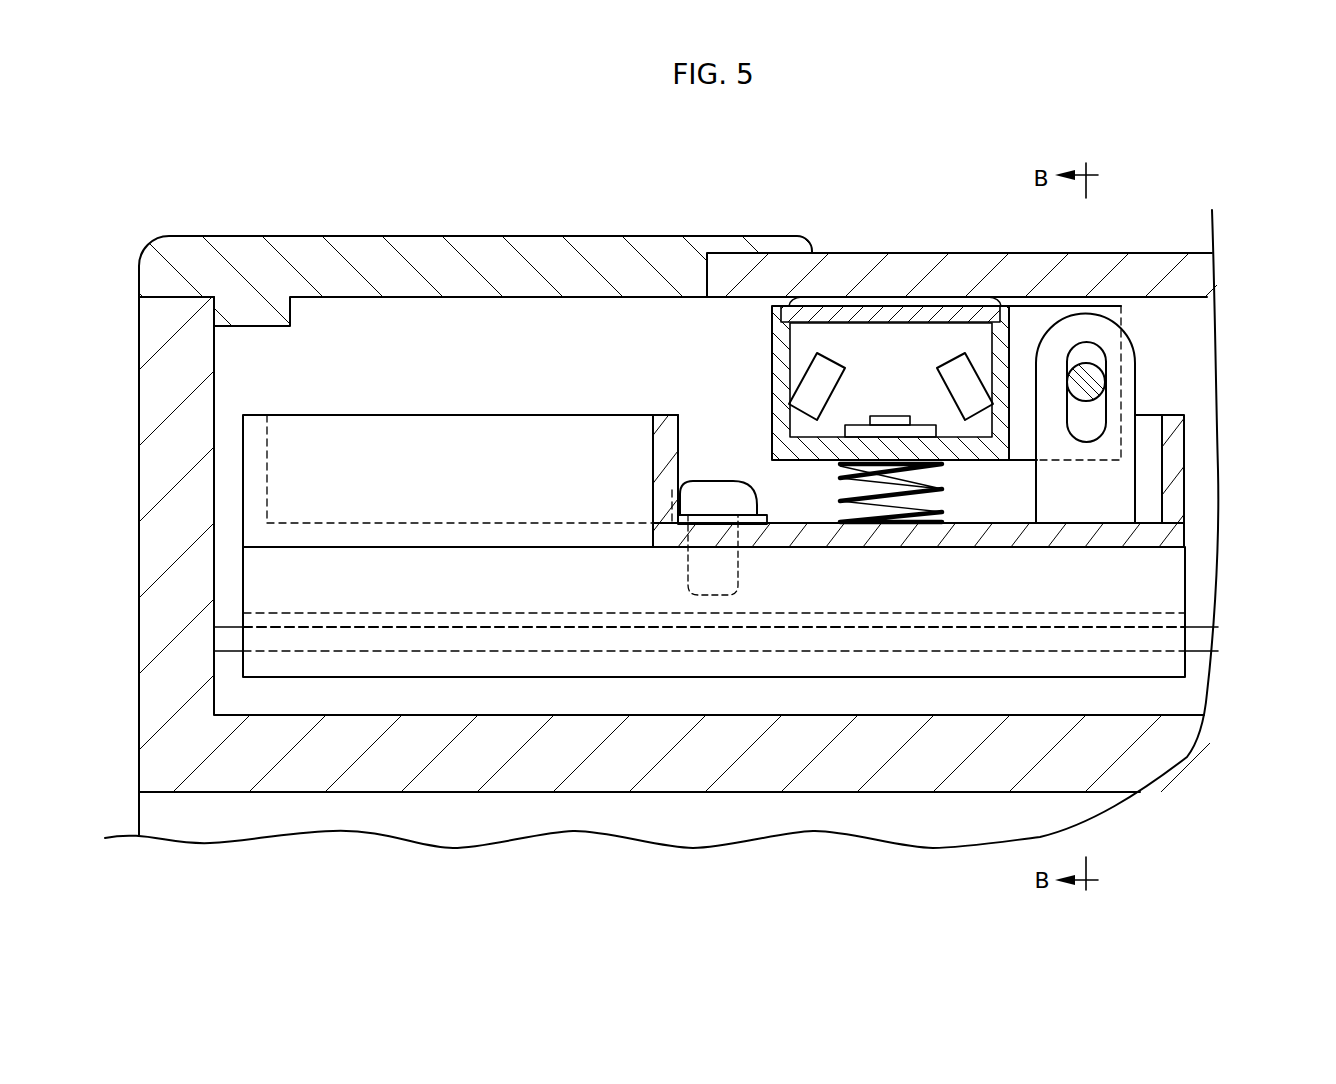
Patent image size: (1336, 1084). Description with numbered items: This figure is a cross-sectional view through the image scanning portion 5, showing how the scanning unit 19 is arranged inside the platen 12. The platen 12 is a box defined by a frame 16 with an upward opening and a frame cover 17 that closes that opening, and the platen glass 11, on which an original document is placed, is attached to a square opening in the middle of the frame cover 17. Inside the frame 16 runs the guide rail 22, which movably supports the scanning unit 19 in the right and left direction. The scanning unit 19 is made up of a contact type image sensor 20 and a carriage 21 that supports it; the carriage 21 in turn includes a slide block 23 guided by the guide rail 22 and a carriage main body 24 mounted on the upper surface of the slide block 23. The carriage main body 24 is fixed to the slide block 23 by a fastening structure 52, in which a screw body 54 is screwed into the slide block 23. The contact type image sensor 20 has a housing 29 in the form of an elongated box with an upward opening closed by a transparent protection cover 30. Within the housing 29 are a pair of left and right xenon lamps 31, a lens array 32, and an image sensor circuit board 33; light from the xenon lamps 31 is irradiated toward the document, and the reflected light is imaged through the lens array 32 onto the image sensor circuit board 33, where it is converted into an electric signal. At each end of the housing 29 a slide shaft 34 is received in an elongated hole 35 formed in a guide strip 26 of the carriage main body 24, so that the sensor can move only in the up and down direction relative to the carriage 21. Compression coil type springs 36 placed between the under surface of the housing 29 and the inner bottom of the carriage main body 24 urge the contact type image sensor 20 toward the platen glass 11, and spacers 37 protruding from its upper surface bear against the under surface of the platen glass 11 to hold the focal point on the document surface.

The image scanning portion 5 is at (256, 198).
The platen glass 11 is at (971, 265).
The platen 12 is at (277, 807).
The frame 16 is at (378, 778).
The frame cover 17 is at (490, 236).
The scanning unit 19 is at (1207, 445).
The contact type image sensor 20 is at (900, 390).
The carriage 21 is at (1270, 512).
The guide rail 22 is at (1197, 625).
The slide block 23 is at (1175, 578).
The carriage main body 24 is at (1177, 515).
The guide strip 26 is at (1119, 419).
The housing 29 is at (773, 383).
The transparent protection cover 30 is at (884, 322).
The xenon lamp 31 is at (940, 380).
The lens array 32 is at (905, 410).
The image sensor circuit board 33 is at (862, 426).
The slide shaft 34 is at (1098, 386).
The elongated hole 35 is at (1077, 427).
The compression coil type spring 36 is at (897, 512).
The spacer 37 is at (832, 306).
The fastening structure 52 is at (666, 514).
The screw body 54 is at (717, 487).